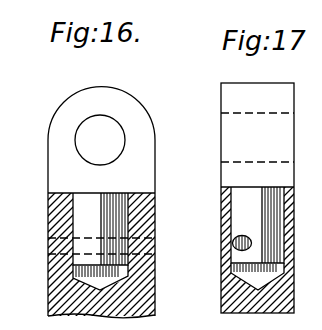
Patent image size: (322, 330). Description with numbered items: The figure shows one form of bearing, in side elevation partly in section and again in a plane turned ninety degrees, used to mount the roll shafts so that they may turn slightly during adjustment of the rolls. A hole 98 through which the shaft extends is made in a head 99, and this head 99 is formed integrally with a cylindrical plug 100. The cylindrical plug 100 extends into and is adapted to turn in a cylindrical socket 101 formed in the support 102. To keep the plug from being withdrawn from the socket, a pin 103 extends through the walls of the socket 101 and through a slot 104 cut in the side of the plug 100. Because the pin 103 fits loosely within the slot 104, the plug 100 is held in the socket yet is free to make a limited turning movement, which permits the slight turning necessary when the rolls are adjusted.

In FIG. 16, the hole 98 is at (115, 133).
In FIG. 16, the head 99 is at (137, 172).
In FIG. 16, the cylindrical plug 100 is at (87, 220).
In FIG. 16, the cylindrical socket 101 is at (74, 276).
In FIG. 16, the support 102 is at (149, 301).
In FIG. 17, the pin 103 is at (236, 244).
In FIG. 17, the slot 104 is at (236, 241).